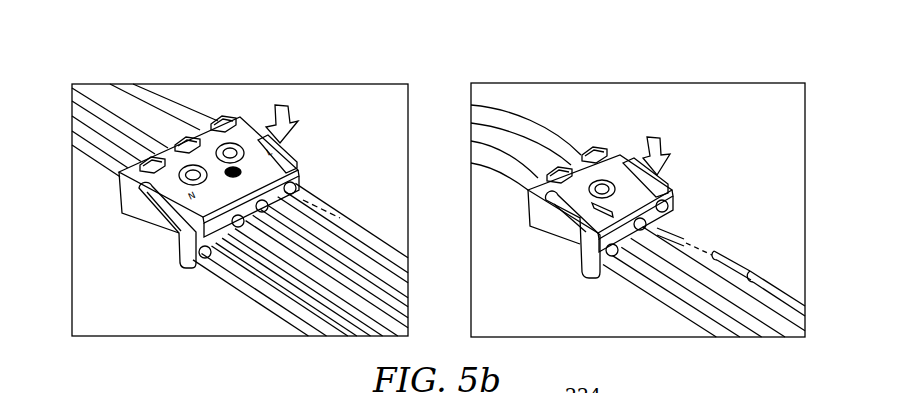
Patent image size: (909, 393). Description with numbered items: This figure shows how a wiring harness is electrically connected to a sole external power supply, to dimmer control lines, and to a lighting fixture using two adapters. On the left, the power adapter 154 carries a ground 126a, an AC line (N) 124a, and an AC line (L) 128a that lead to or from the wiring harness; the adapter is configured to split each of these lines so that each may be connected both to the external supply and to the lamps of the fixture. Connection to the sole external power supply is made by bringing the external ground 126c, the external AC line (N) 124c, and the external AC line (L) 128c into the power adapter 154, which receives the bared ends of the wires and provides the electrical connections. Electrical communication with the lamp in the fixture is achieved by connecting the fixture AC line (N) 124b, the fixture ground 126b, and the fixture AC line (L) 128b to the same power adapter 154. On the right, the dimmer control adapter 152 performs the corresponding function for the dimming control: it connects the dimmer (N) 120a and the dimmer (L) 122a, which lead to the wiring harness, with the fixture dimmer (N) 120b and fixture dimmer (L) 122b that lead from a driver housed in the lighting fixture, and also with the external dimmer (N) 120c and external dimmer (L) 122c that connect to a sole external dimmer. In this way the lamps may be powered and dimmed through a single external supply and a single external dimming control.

The dimmer (N) 120a is at (525, 132).
The fixture dimmer (N) 120b is at (664, 236).
The external dimmer (N) 120c is at (783, 296).
The dimmer (L) 122a is at (506, 166).
The fixture dimmer (L) 122b is at (637, 265).
The external dimmer (L) 122c is at (678, 278).
The AC line (N) 124a is at (83, 138).
The fixture AC line (N) 124b is at (226, 256).
The external AC line (N) 124c is at (322, 301).
The ground 126a is at (97, 103).
The fixture ground 126b is at (272, 234).
The external ground 126c is at (305, 211).
The AC line (L) 128a is at (150, 105).
The fixture AC line (L) 128b is at (350, 245).
The external AC line (L) 128c is at (392, 250).
The dimmer control adapter 152 is at (670, 195).
The power adapter 154 is at (150, 232).